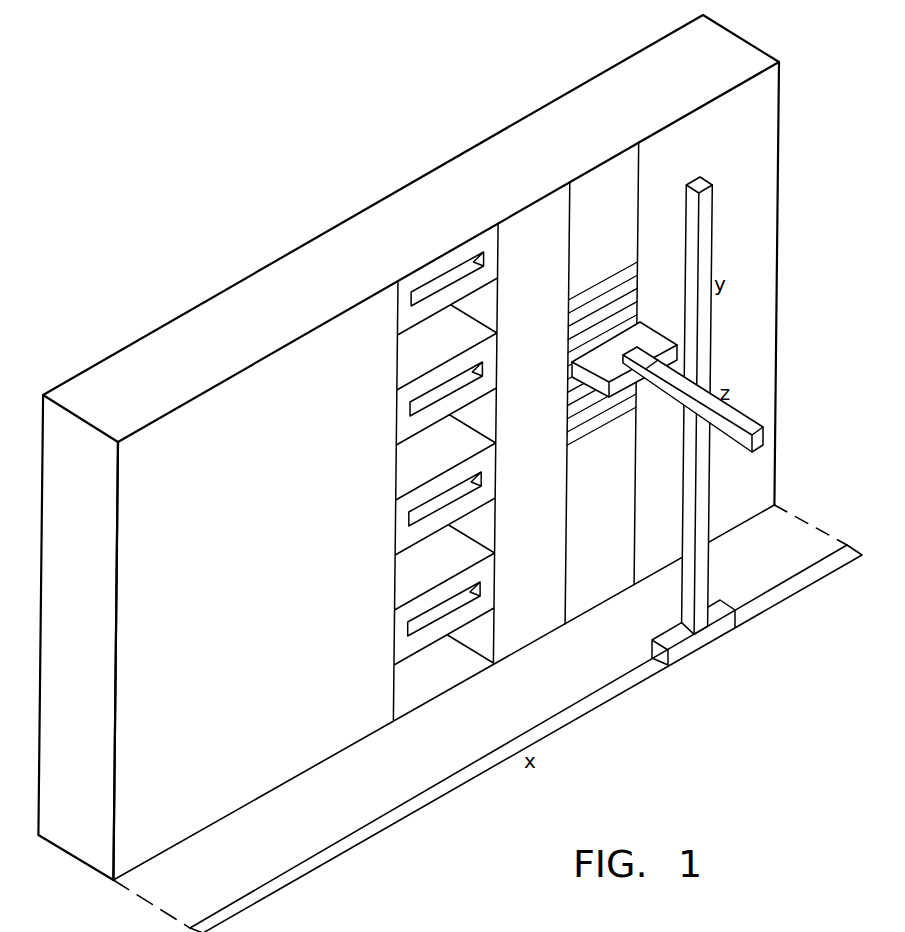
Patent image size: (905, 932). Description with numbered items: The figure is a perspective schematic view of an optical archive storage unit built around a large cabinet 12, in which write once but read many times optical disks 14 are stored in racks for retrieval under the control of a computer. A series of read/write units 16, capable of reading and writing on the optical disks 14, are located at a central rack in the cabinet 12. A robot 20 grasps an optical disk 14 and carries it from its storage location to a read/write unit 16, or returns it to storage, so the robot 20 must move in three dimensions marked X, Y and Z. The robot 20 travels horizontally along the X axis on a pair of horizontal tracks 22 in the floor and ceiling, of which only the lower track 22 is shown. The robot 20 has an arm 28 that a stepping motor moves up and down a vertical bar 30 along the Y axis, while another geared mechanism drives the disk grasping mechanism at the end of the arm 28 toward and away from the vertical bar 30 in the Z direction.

The cabinet 12 is at (665, 37).
The optical disk 14 is at (569, 425).
The read/write unit 16 is at (397, 393).
The robot 20 is at (720, 457).
The horizontal track 22 is at (815, 582).
The arm 28 is at (742, 413).
The vertical bar 30 is at (713, 237).